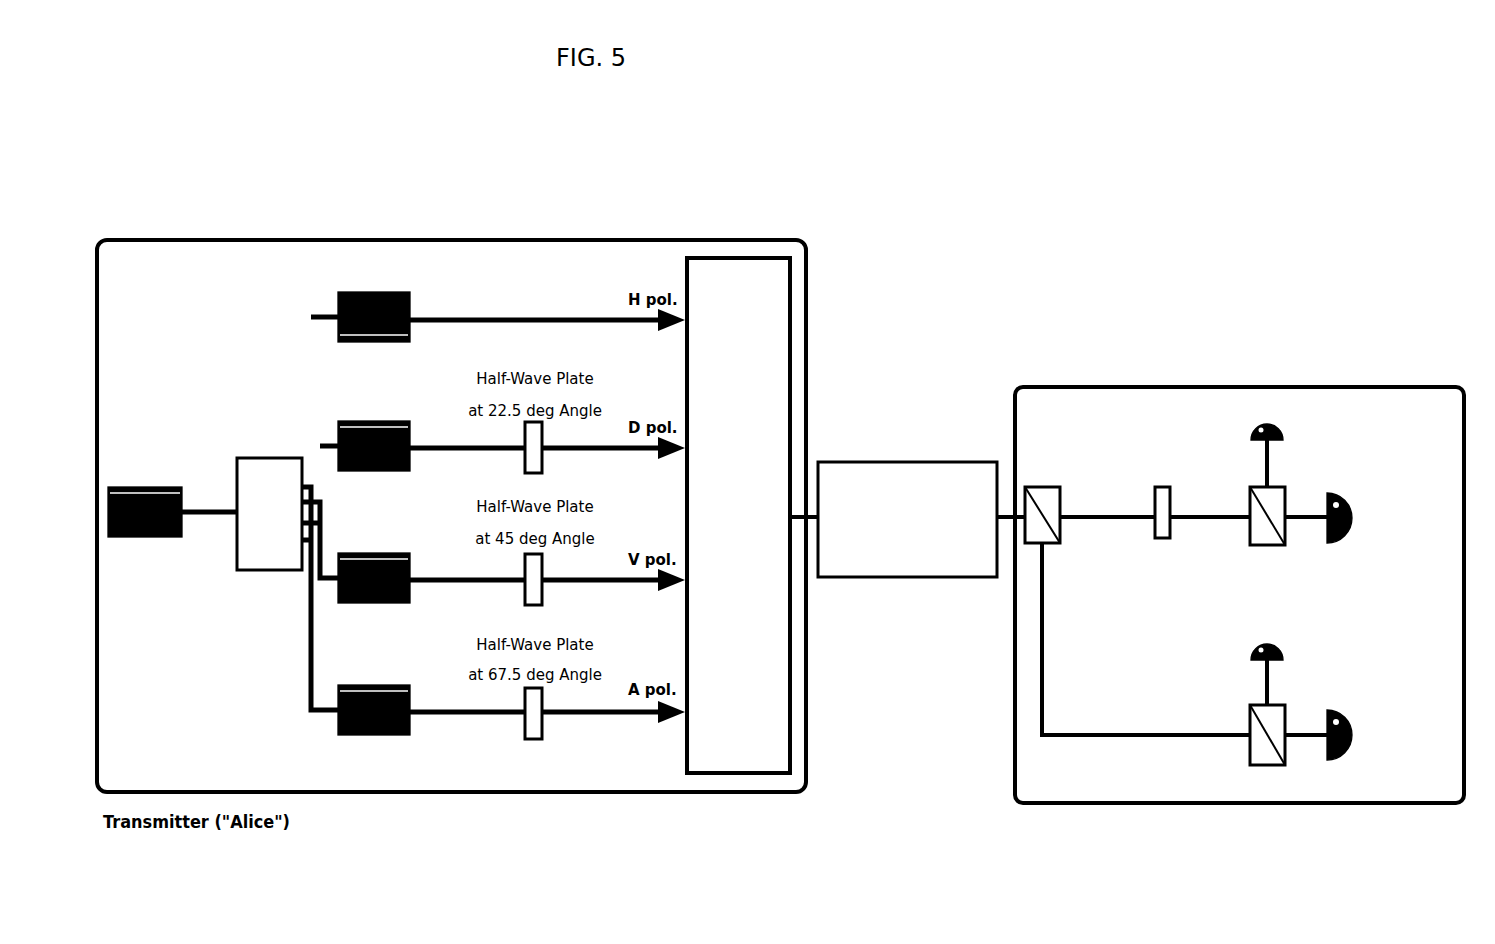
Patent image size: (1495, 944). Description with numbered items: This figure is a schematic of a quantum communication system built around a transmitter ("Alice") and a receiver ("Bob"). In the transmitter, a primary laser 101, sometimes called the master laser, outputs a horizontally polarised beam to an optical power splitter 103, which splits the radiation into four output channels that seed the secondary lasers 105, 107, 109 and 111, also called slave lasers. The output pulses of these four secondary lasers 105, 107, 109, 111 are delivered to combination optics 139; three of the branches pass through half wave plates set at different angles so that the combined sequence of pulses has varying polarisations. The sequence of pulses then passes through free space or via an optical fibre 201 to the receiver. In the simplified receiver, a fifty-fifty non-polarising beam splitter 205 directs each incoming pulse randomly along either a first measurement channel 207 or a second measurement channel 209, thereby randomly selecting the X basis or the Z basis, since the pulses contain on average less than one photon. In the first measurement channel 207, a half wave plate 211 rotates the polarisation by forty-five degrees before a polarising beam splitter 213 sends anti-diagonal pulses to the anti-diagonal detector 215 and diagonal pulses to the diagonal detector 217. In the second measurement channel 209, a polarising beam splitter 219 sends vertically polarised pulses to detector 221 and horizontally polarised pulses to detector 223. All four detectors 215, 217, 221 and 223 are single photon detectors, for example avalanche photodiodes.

The primary laser 101 is at (138, 542).
The optical power splitter 103 is at (269, 546).
The secondary laser 105 is at (397, 322).
The secondary laser 107 is at (397, 449).
The secondary laser 109 is at (397, 585).
The secondary laser 111 is at (397, 715).
The combination optics 139 is at (737, 756).
The optical fibre 201 is at (907, 546).
The 50-50 beam splitter 205 is at (1239, 598).
The first measurement channel 207 is at (1077, 491).
The second measurement channel 209 is at (1146, 639).
The half wave plate 211 is at (1158, 537).
The polarising beam splitter 213 is at (1277, 545).
The anti-diagonal detector 215 is at (1306, 435).
The diagonal detector 217 is at (1374, 523).
The polarising beam splitter 219 is at (1262, 758).
The detector 221 is at (1303, 656).
The detector 223 is at (1373, 746).